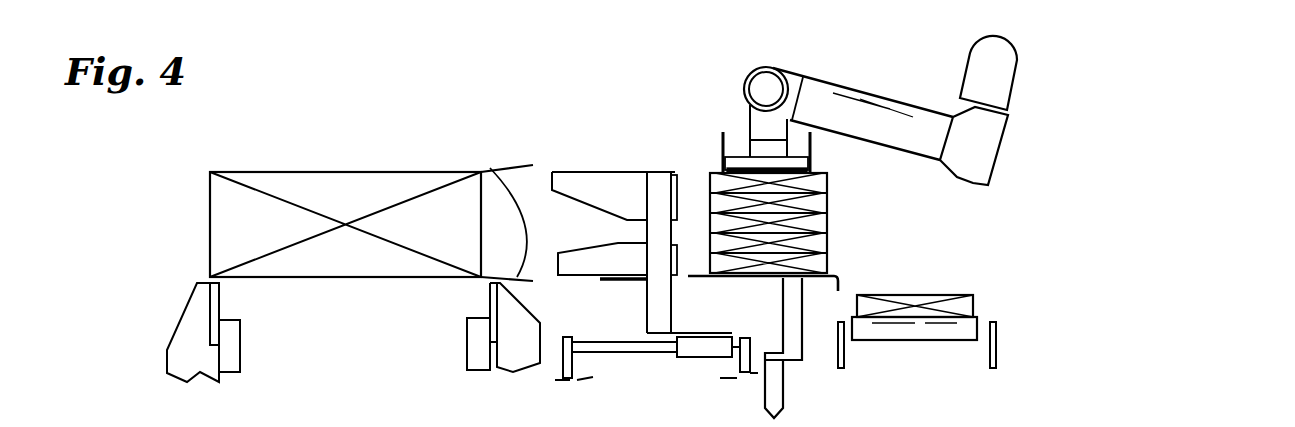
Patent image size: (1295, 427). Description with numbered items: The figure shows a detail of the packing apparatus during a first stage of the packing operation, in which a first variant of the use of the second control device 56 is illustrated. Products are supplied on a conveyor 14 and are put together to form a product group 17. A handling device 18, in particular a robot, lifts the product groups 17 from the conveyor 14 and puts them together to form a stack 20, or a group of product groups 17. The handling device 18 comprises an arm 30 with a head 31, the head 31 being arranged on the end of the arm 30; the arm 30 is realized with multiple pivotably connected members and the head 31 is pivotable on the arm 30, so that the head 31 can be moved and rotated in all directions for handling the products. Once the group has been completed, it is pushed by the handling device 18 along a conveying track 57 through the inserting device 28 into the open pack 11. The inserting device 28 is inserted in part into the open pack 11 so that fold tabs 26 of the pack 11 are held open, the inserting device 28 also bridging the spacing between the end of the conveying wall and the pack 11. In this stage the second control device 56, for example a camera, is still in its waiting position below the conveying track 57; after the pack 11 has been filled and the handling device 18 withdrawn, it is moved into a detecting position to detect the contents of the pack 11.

The pack 11 is at (343, 168).
The fold tabs 26 is at (521, 166).
The inserting device 28 is at (610, 168).
The conveying track 57 is at (675, 279).
The head 31 is at (715, 152).
The stack 20 is at (838, 222).
The arm 30 is at (903, 130).
The handling device 18 is at (1033, 79).
The second control device 56 is at (793, 325).
The product group 17 is at (955, 304).
The conveyor 14 is at (923, 329).